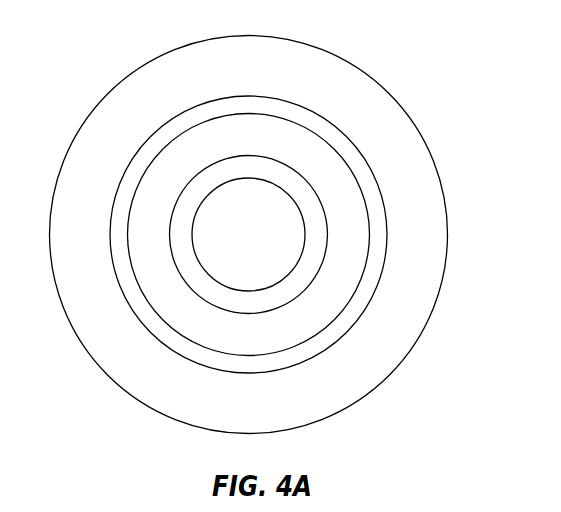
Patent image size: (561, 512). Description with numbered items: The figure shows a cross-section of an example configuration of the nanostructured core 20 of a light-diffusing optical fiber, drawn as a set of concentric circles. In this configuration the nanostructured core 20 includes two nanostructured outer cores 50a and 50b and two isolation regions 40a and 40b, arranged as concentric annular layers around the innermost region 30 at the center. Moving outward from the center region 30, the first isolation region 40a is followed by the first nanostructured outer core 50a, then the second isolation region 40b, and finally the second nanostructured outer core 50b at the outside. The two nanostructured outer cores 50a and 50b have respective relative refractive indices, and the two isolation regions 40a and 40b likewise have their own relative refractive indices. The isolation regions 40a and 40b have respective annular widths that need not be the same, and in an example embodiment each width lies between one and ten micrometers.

The nanostructured core 20 is at (94, 46).
The inner conductor / core 30 is at (283, 188).
The isolation region 40a is at (317, 190).
The nanostructured outer core 50a is at (365, 193).
The isolation region 40b is at (385, 203).
The nanostructured outer core 50b is at (448, 206).